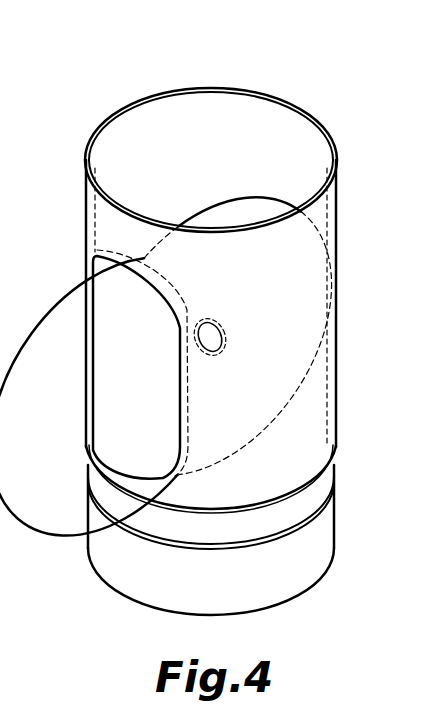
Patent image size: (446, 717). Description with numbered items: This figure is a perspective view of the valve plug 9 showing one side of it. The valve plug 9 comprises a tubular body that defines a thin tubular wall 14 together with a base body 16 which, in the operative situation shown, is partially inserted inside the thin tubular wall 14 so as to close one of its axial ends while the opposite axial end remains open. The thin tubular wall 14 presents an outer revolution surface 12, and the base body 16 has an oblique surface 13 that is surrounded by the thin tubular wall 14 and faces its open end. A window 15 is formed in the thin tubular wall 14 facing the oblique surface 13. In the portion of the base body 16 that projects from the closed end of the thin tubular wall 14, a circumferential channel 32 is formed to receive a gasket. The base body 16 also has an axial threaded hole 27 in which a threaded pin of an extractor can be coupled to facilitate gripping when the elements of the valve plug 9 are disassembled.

The valve plug 9 is at (70, 100).
The outer revolution surface 12 is at (336, 328).
The oblique surface 13 is at (251, 203).
The thin tubular wall 14 is at (267, 97).
The window 15 is at (99, 312).
The base body 16 is at (123, 565).
The axial threaded hole 27 is at (193, 338).
The circumferential channel 32 is at (268, 529).